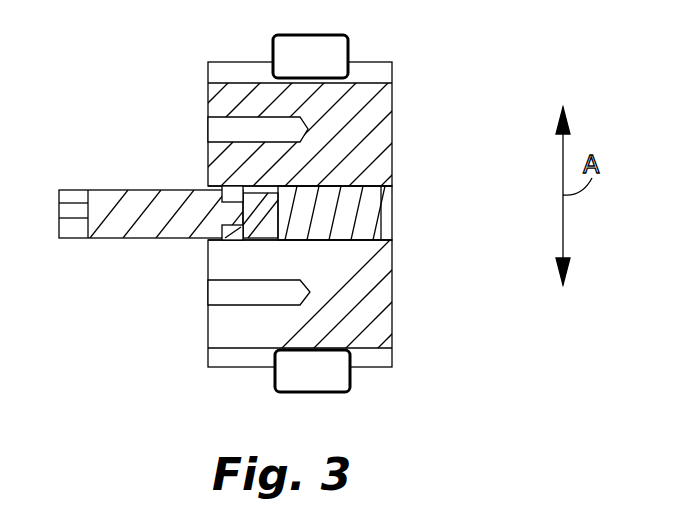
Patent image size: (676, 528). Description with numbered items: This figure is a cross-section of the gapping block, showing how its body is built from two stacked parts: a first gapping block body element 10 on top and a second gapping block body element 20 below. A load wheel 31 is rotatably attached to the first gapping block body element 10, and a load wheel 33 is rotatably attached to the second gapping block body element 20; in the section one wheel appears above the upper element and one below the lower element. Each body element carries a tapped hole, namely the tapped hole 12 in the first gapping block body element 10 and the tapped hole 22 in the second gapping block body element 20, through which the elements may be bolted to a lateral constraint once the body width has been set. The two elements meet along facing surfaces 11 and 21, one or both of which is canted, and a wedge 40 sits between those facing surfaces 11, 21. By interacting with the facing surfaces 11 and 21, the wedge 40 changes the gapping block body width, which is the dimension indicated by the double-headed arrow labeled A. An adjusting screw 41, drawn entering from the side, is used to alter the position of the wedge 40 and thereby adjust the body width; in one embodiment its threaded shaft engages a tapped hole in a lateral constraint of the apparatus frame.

The first gapping block body element 10 is at (383, 112).
The facing surface 11 is at (337, 183).
The tapped hole 12 is at (212, 130).
The second gapping block body element 20 is at (378, 310).
The facing surface 21 is at (350, 244).
The tapped hole 22 is at (217, 297).
The load wheel 31 is at (315, 50).
The load wheel 33 is at (322, 382).
The wedge 40 is at (330, 215).
The adjusting screw 41 is at (140, 198).